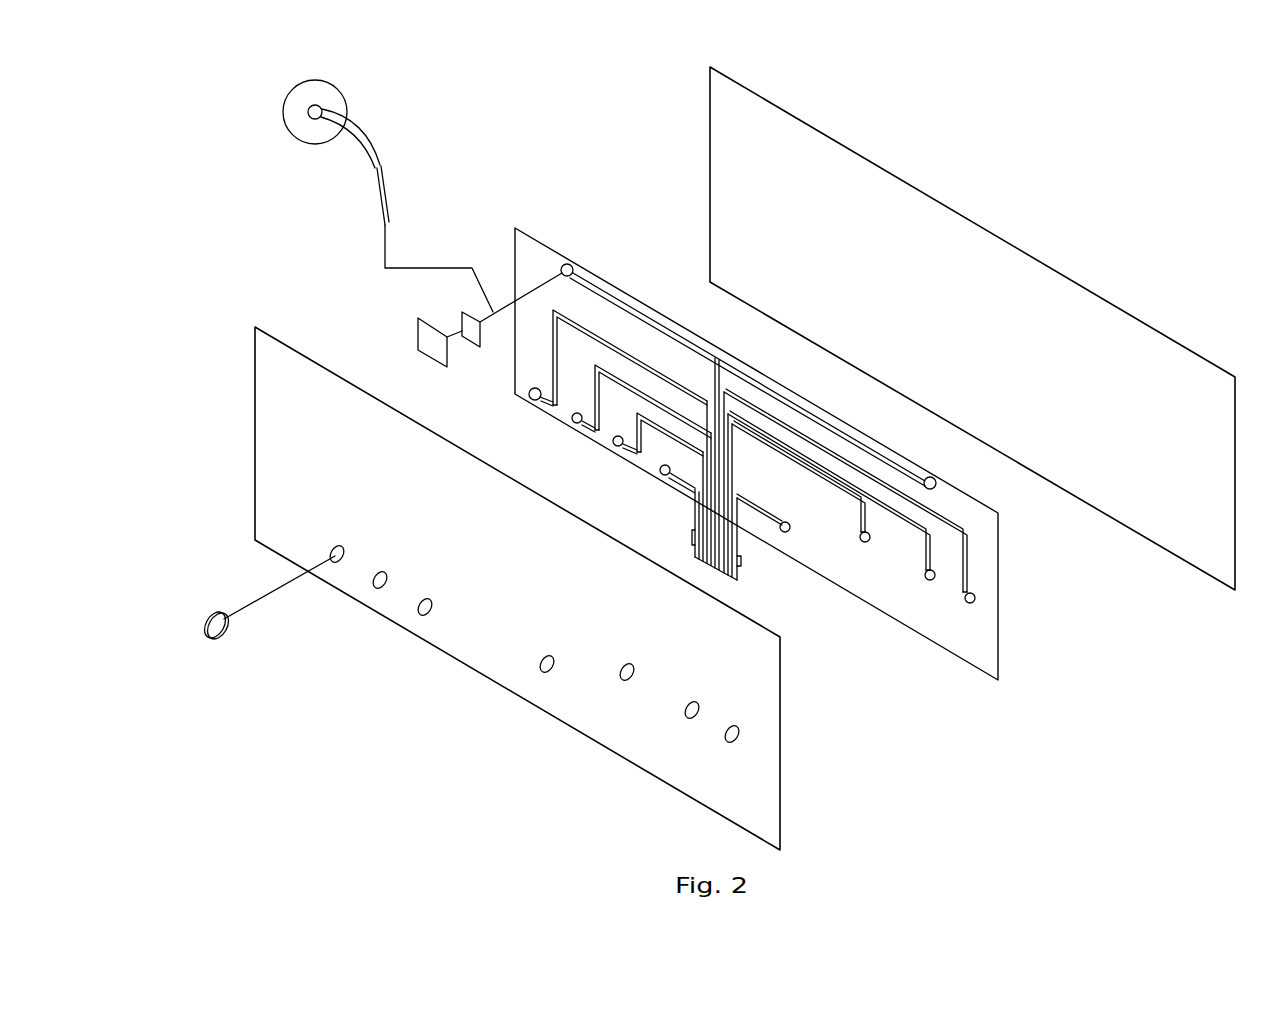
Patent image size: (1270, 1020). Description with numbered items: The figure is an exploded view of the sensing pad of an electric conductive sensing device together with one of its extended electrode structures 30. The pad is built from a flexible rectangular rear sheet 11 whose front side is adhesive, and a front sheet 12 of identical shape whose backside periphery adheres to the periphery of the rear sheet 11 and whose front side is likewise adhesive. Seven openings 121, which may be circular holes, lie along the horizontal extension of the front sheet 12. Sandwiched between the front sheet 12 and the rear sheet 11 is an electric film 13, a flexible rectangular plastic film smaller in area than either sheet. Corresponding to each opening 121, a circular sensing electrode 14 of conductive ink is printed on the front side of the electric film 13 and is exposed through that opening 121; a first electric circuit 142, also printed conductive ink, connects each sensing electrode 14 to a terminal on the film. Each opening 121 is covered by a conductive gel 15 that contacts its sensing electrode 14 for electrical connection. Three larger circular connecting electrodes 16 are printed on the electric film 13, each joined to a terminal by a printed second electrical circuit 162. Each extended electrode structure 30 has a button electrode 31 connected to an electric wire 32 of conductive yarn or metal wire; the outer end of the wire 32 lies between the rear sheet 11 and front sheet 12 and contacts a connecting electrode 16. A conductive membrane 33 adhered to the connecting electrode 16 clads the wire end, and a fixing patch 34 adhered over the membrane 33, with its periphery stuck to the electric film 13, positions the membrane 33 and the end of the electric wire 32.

The rear sheet 11 is at (878, 190).
The front sheet 12 is at (262, 388).
The openings 121 is at (555, 658).
The electric film 13 is at (990, 584).
The sensing electrode 14 is at (575, 424).
The first electric circuit 142 is at (642, 392).
The conductive gel 15 is at (213, 640).
The connecting electrode 16 is at (567, 263).
The second electrical circuit 162 is at (628, 302).
The extended electrode structure 30 is at (408, 156).
The button electrode 31 is at (323, 114).
The electric wire 32 is at (387, 219).
The conductive membrane 33 is at (462, 315).
The fixing patch 34 is at (427, 348).